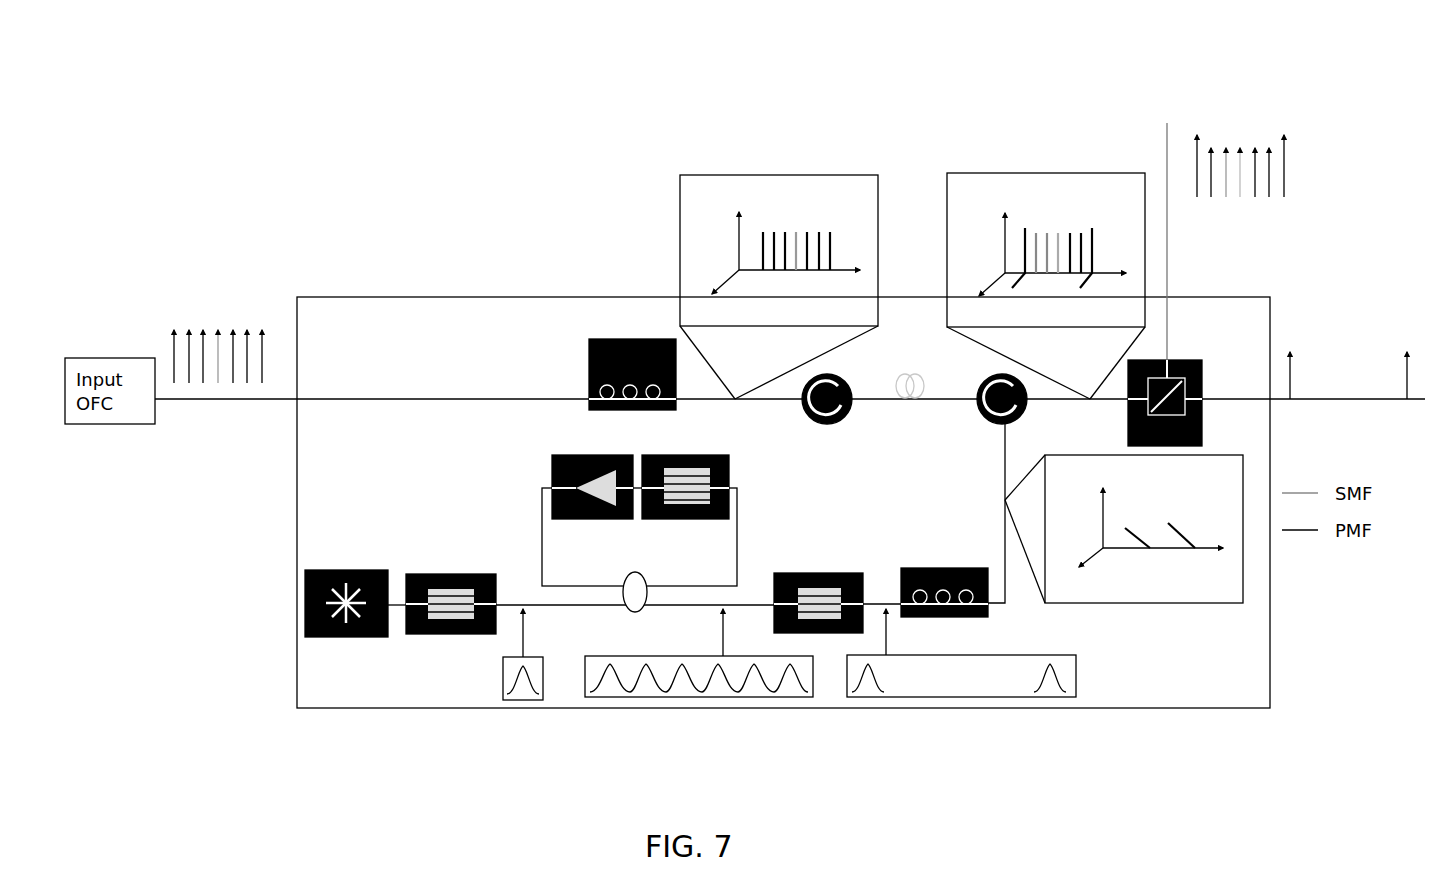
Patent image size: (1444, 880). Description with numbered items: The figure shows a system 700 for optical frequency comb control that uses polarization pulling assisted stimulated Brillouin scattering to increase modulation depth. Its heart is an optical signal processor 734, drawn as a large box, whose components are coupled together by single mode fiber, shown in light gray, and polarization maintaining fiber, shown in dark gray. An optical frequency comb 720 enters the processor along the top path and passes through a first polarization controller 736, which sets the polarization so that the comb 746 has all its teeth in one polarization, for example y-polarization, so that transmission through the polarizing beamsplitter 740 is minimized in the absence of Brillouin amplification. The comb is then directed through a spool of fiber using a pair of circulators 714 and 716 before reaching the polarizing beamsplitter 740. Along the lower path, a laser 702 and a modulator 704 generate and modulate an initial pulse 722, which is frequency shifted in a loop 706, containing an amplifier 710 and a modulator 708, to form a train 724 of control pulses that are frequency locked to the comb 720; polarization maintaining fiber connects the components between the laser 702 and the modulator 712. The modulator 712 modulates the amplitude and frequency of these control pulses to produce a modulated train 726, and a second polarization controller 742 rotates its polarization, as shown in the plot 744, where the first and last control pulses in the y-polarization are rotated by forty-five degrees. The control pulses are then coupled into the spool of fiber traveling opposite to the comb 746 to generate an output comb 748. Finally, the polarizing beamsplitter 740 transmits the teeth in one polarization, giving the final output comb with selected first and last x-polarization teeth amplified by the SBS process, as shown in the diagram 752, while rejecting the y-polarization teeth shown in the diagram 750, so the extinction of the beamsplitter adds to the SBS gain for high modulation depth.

The system 700 is at (1411, 37).
The laser 702 is at (340, 638).
The modulator 704 is at (446, 637).
The loop 706 is at (542, 532).
The modulator 708 is at (697, 450).
The amplifier 710 is at (570, 450).
The modulator 712 is at (822, 573).
The circulator 714 is at (975, 412).
The circulator 716 is at (823, 423).
The optical frequency comb 720 is at (215, 303).
The initial pulse 722 is at (527, 700).
The train of control pulses 724 is at (677, 697).
The modulated train 726 is at (950, 697).
The optical signal processor 734 is at (400, 297).
The first polarization controller 736 is at (605, 339).
The polarizing beamsplitter 740 is at (1190, 360).
The second polarization controller 742 is at (940, 568).
The plot 744 is at (1175, 595).
The comb 746 is at (745, 175).
The output comb 748 is at (1022, 173).
The diagram 750 is at (1397, 155).
The diagram 752 is at (1400, 305).